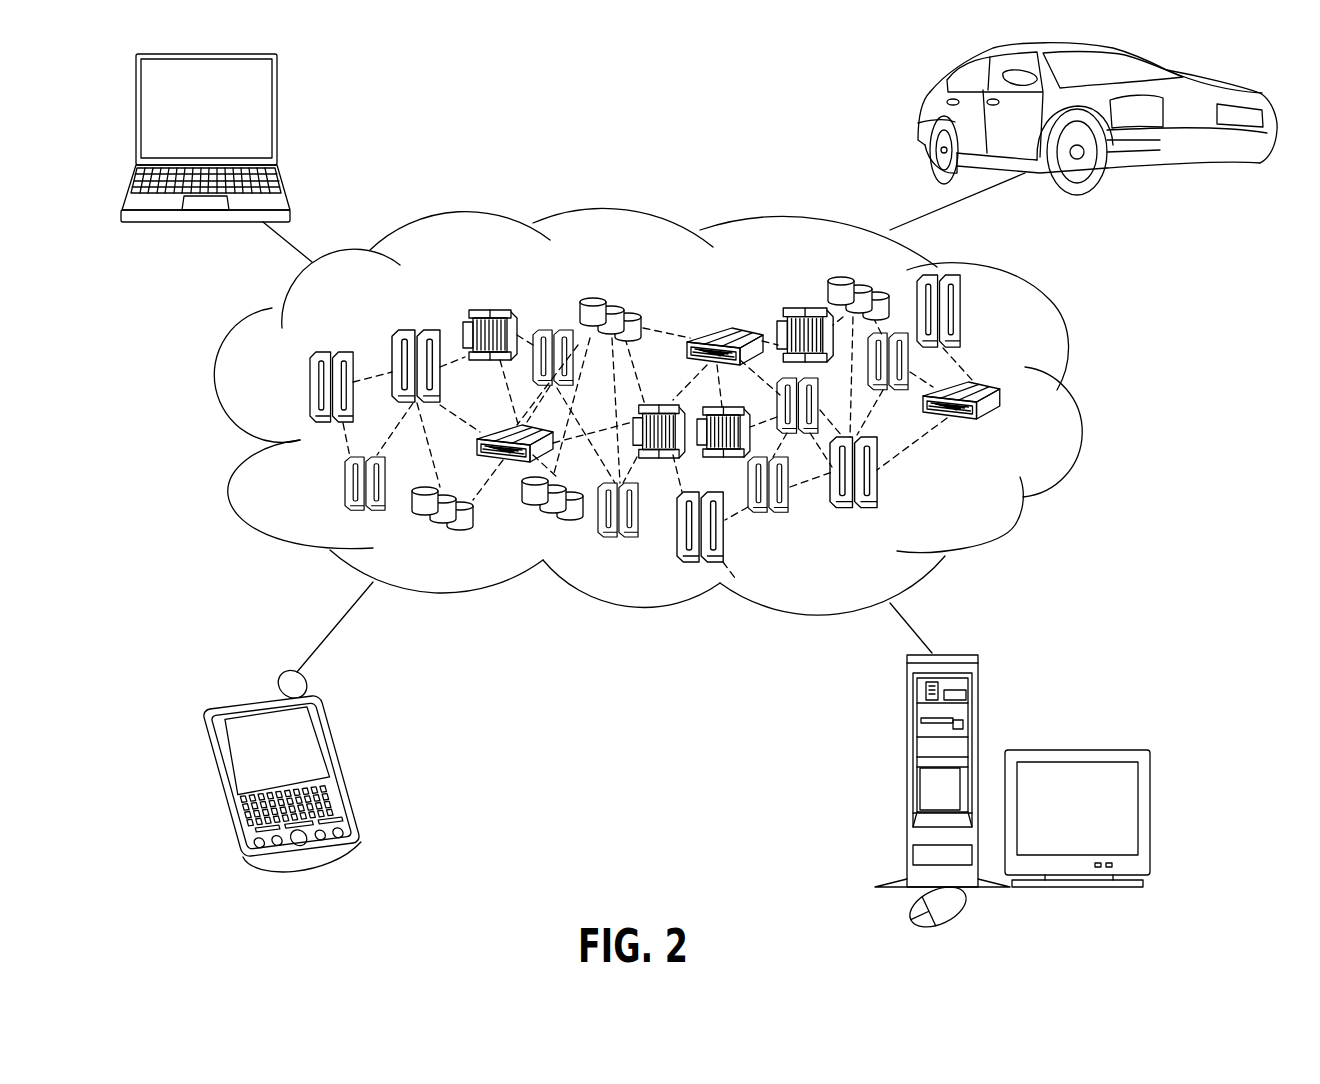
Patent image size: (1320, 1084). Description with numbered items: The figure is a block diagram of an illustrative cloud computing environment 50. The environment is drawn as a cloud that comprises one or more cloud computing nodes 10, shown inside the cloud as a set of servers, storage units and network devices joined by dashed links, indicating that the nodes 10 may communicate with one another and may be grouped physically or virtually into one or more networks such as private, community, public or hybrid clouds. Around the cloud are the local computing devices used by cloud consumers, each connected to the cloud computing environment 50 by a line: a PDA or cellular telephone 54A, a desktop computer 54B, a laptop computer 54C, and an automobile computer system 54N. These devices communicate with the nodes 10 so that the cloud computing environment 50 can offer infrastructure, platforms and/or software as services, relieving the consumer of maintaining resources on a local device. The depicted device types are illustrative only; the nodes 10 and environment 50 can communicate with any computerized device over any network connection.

The cloud computing node 10 is at (988, 507).
The cloud computing environment 50 is at (682, 411).
The PDA or cellular telephone 54A is at (332, 730).
The desktop computer 54B is at (905, 715).
The laptop computer 54C is at (277, 92).
The automobile computer system 54N is at (918, 112).